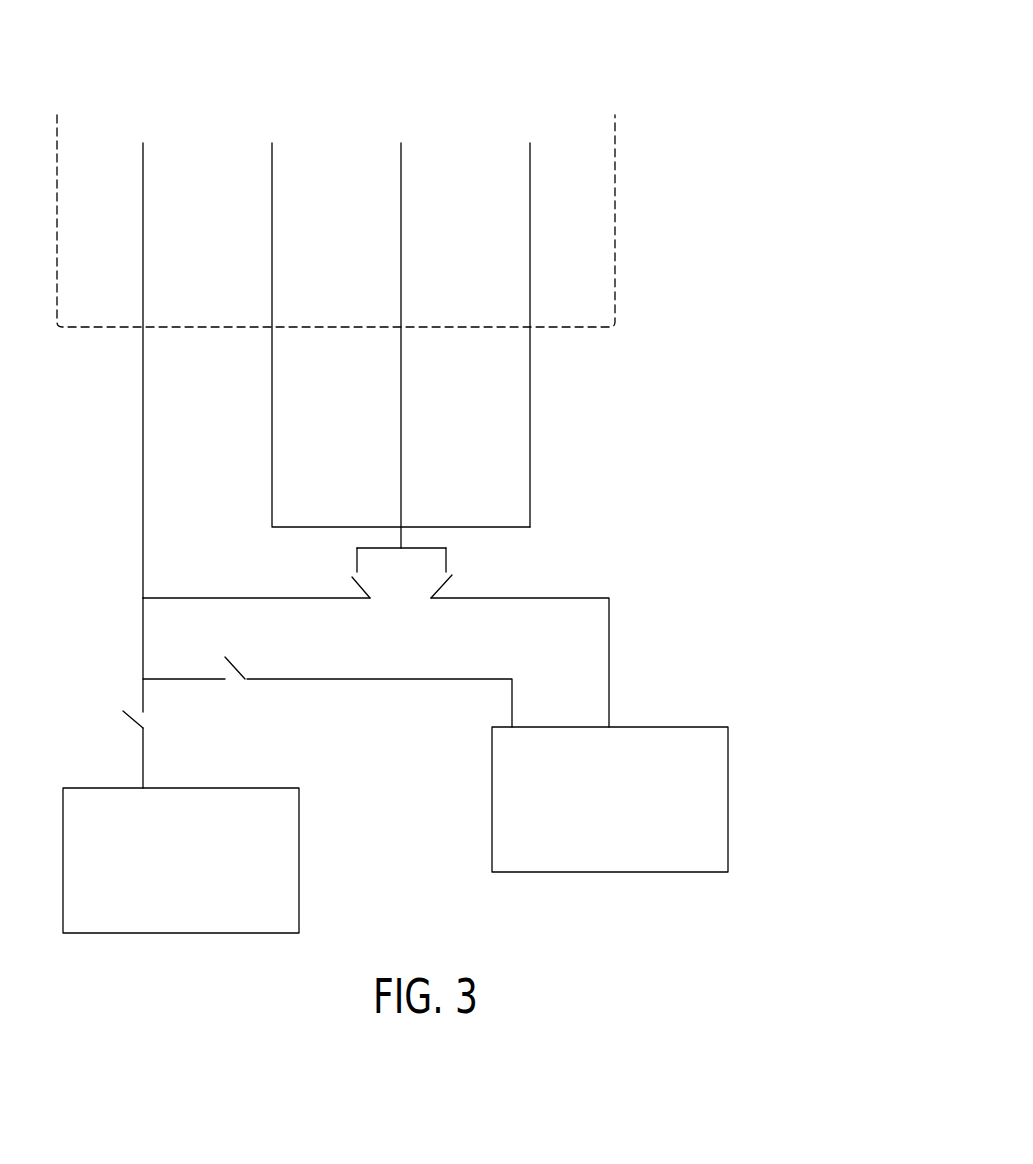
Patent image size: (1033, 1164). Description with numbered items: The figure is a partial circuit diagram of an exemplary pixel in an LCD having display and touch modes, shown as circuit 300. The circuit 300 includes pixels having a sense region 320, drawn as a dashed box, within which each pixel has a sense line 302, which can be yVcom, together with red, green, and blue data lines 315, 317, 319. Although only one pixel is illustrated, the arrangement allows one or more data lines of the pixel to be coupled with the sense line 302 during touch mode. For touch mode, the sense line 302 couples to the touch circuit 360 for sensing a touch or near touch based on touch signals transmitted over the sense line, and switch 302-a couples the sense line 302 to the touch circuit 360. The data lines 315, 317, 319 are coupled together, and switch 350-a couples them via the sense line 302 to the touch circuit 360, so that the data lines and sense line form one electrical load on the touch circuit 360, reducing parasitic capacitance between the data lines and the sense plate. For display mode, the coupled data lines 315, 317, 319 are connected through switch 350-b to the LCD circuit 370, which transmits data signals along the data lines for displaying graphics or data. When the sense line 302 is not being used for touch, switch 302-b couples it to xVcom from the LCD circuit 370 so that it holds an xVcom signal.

The circuit 300 is at (641, 82).
The sense line 302 is at (143, 165).
The red data line 315 is at (272, 165).
The green data line 317 is at (401, 165).
The blue data line 319 is at (530, 165).
The sense region 320 is at (615, 222).
The switch 350-a is at (362, 592).
The switch 350-b is at (440, 592).
The switch 302-a is at (133, 720).
The switch 302-b is at (235, 681).
The touch circuit 360 is at (299, 860).
The LCD circuit 370 is at (728, 797).